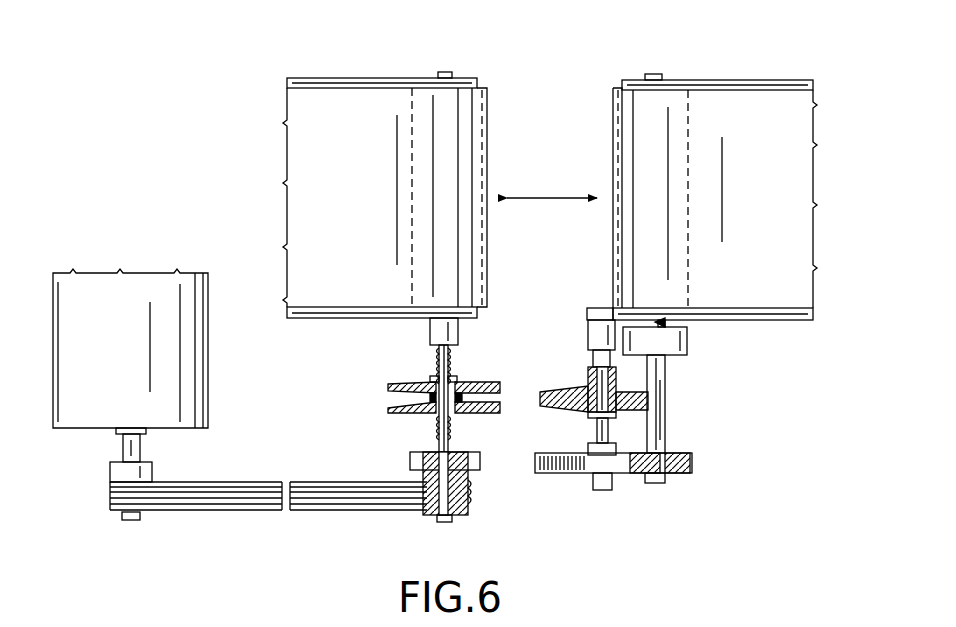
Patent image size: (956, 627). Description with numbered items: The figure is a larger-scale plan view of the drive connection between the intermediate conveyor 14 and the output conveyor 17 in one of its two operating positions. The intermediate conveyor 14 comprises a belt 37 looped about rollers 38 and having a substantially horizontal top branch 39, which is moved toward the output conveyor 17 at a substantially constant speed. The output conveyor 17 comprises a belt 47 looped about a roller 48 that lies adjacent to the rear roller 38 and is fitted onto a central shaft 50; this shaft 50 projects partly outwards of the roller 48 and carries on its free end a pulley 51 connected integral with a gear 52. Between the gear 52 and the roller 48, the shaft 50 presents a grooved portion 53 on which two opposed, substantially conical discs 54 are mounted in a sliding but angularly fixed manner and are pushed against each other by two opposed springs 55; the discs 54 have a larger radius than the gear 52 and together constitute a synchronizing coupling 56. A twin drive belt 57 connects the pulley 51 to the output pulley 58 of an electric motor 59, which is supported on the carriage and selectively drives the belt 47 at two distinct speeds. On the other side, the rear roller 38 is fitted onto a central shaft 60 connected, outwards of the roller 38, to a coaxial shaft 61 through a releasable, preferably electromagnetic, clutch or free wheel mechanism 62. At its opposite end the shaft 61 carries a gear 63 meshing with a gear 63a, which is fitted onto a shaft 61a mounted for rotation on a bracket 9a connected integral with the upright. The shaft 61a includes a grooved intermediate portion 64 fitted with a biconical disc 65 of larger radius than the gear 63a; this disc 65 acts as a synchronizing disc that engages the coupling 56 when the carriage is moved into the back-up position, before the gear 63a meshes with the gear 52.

The bracket 9a is at (600, 310).
The intermediate conveyor 14 is at (735, 172).
The output conveyor 17 is at (375, 166).
The belt 37 is at (817, 157).
The roller 38 is at (662, 112).
The top branch 39 is at (795, 244).
The belt 47 is at (279, 209).
The roller 48 is at (462, 103).
The central shaft 50 is at (430, 423).
The pulley 51 is at (432, 515).
The gear 52 is at (474, 468).
The grooved portion 53 is at (430, 378).
The conical disc 54 is at (391, 390).
The spring 55 is at (433, 360).
The synchronizing coupling 56 is at (391, 412).
The twin drive belt 57 is at (259, 484).
The output pulley 58 is at (110, 470).
The electric motor 59 is at (78, 418).
The central shaft 60 is at (668, 323).
The coaxial shaft 61 is at (673, 441).
The shaft 61a is at (614, 432).
The free wheel mechanism 62 is at (688, 350).
The gear 63 is at (692, 468).
The gear 63a is at (572, 476).
The grooved intermediate portion 64 is at (590, 376).
The biconical disc 65 is at (577, 408).